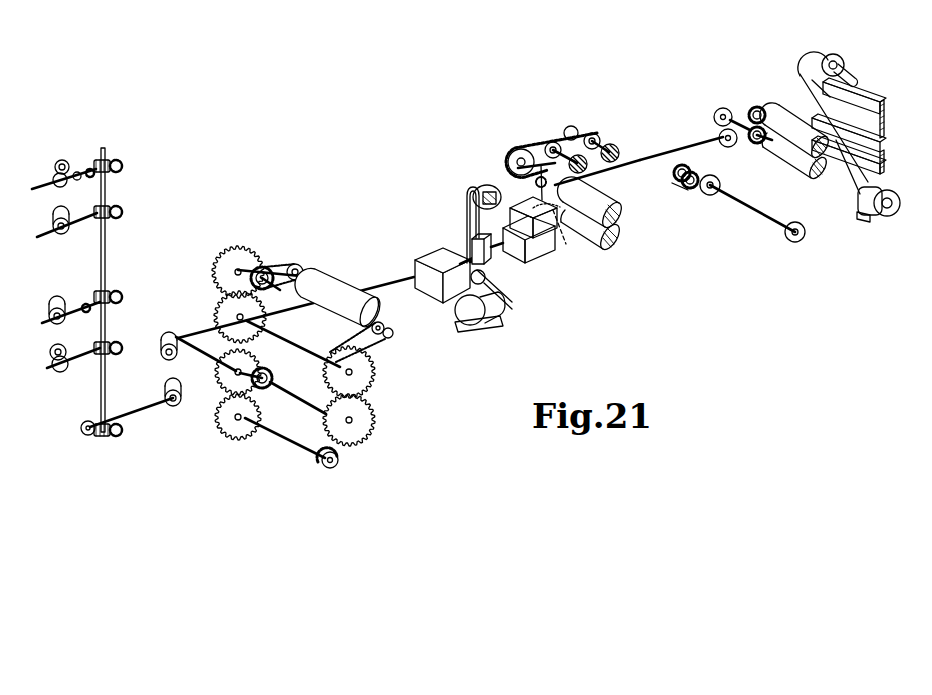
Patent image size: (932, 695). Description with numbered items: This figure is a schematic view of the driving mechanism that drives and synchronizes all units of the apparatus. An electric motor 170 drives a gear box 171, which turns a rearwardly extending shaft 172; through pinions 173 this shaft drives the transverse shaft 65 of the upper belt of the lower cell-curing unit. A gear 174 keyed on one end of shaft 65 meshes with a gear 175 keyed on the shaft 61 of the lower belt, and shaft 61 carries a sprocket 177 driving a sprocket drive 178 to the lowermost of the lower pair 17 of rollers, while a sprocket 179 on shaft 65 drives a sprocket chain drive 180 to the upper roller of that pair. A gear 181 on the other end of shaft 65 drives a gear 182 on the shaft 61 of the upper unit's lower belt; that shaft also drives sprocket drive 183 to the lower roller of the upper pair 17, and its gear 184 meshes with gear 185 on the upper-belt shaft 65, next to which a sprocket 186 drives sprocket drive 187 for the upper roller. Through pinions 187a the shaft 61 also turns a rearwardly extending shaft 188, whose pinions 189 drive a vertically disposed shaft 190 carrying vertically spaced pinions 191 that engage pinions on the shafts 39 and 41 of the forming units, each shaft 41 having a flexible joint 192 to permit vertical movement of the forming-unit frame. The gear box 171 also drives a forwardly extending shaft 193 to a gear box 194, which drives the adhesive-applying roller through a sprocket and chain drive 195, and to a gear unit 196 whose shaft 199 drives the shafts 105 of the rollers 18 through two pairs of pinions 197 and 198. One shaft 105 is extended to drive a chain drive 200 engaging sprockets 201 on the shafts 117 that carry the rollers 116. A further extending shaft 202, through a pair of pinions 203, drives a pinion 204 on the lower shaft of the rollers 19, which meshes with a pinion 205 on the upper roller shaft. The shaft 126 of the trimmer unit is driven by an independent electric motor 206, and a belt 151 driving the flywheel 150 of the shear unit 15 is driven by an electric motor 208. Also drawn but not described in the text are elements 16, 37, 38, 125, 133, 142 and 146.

The shear unit 15 is at (886, 96).
The pinion 16 is at (76, 172).
The pair of rollers 17 is at (327, 283).
The rollers 18 is at (621, 235).
The rollers 19 is at (792, 162).
The wheel 37 is at (60, 162).
The wheel 38 is at (66, 185).
The shaft 39 is at (40, 235).
The shaft 41 is at (43, 190).
The shaft 61 is at (310, 335).
The transverse shaft 65 is at (279, 284).
The shaft 105 is at (598, 180).
The rollers 116 is at (616, 163).
The shaft 117 is at (612, 143).
The wheel 125 is at (709, 196).
The shaft 126 is at (754, 213).
The rail 133 is at (887, 152).
The rail 142 is at (887, 125).
The roller 146 is at (845, 60).
The flywheel 150 is at (832, 50).
The belt 151 is at (840, 174).
The electric motor 170 is at (483, 325).
The gear box 171 is at (428, 262).
The rearwardly extending shaft 172 is at (393, 284).
The pinions 173 is at (172, 333).
The gear 174 is at (220, 380).
The gear 175 is at (237, 430).
The sprocket 177 is at (324, 468).
The sprocket drive 178 is at (340, 463).
The sprocket 179 is at (268, 372).
The sprocket chain drive 180 is at (278, 378).
The gear 181 is at (330, 422).
The gear 182 is at (368, 372).
The sprocket drive 183 is at (389, 338).
The gear 184 is at (221, 303).
The gear 185 is at (238, 250).
The sprocket 186 is at (262, 266).
The sprocket drive 187 is at (296, 264).
The pinions 187a is at (176, 406).
The rearwardly extending shaft 188 is at (133, 412).
The pinions 189 is at (90, 436).
The vertically disposed shaft 190 is at (106, 262).
The pinions 191 is at (107, 344).
The flexible joint 192 is at (98, 177).
The forwardly extending shaft 193 is at (466, 258).
The gear box 194 is at (490, 262).
The sprocket and chain drive 195 is at (466, 206).
The gear unit 196 is at (545, 258).
The pinions 197 is at (577, 237).
The pinions 198 is at (542, 172).
The shaft 199 is at (537, 188).
The chain drive 200 is at (528, 146).
The sprockets 201 is at (593, 132).
The extending shaft 202 is at (663, 165).
The pair of pinions 203 is at (723, 108).
The pinion 204 is at (757, 146).
The pinion 205 is at (758, 106).
The electric motor 206 is at (681, 184).
The electric motor 208 is at (885, 192).